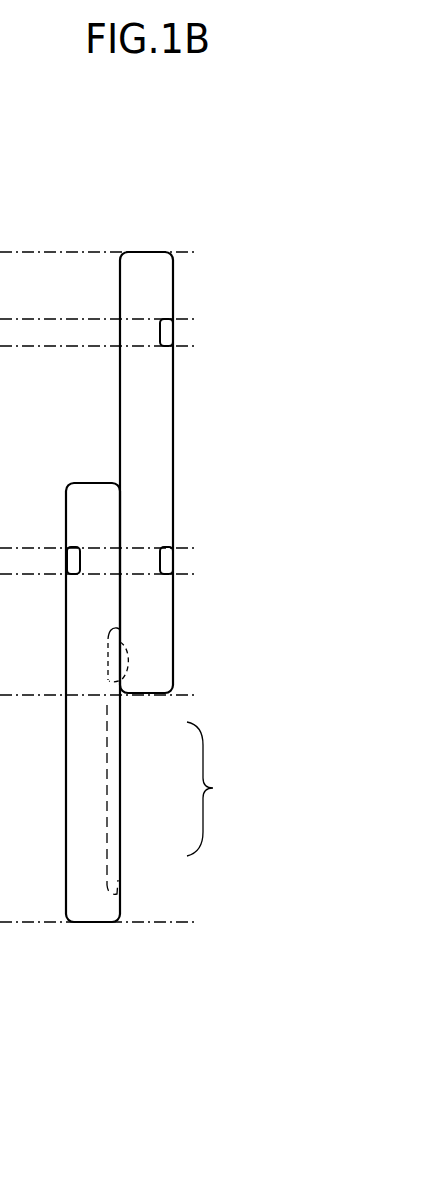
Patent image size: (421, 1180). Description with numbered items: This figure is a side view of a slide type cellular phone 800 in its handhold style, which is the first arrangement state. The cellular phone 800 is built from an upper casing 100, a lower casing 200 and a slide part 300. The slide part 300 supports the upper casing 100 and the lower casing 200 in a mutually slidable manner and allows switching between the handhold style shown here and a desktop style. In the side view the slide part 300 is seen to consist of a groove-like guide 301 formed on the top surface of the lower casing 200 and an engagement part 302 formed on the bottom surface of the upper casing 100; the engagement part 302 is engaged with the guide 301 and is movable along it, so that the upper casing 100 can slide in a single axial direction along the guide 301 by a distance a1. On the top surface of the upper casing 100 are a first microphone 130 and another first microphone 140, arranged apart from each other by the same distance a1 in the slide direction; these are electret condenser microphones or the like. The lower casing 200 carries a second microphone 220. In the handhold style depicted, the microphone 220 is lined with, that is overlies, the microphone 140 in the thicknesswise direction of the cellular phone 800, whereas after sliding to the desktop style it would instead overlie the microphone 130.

The cellular phone 800 is at (133, 172).
The upper casing 100 is at (147, 265).
The microphone 130 is at (167, 333).
The microphone 140 is at (165, 560).
The lower casing 200 is at (93, 895).
The microphone 220 is at (73, 560).
The slide part 300 is at (222, 789).
The guide 301 is at (105, 803).
The engagement part 302 is at (126, 675).